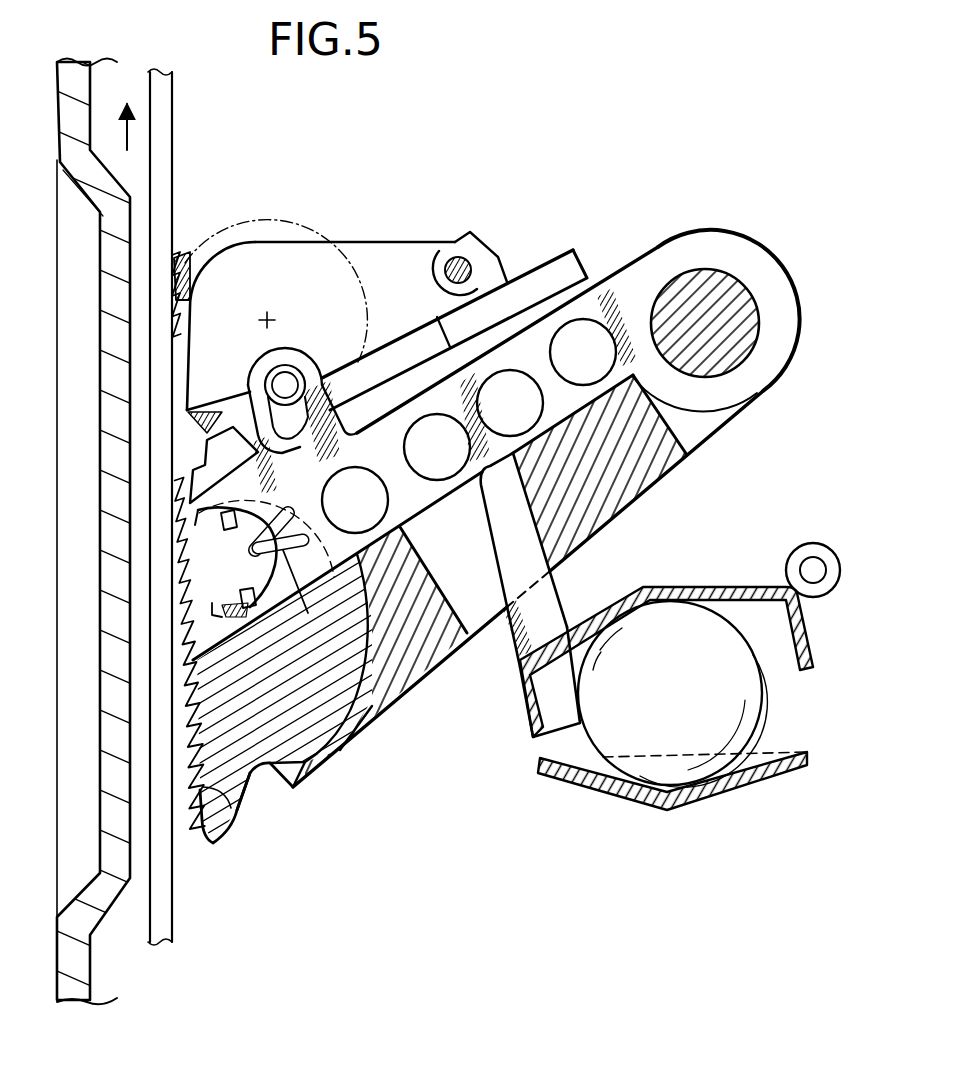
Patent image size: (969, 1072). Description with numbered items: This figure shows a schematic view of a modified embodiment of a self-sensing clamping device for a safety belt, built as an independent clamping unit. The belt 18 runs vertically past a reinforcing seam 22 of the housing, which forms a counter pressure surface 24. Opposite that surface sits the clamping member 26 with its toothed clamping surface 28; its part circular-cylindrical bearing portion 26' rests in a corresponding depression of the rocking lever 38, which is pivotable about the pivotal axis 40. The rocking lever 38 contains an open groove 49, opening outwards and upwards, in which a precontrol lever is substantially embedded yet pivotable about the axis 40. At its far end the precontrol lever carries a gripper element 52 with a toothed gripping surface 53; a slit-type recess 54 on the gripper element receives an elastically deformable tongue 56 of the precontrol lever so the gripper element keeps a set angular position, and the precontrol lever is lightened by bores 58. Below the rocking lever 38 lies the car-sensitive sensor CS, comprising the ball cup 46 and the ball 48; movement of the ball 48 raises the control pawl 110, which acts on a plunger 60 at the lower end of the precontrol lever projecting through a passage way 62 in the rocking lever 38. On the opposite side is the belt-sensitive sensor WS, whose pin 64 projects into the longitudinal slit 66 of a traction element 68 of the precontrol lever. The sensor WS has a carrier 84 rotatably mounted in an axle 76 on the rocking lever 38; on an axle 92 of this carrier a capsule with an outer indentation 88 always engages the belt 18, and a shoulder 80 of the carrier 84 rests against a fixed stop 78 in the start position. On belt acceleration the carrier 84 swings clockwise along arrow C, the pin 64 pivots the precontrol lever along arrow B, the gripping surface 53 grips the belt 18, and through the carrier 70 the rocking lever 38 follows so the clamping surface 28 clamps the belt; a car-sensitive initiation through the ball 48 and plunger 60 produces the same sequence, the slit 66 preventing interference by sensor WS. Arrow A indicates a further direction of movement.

The belt 18 is at (164, 154).
The reinforcing seam 22 is at (105, 599).
The counter pressure surface 24 is at (140, 687).
The clamping member 26 is at (269, 800).
The part circular-cylindrical bearing portion 26' is at (327, 777).
The clamping surface 28 is at (224, 828).
The rocking lever 38 is at (400, 698).
The pivotal axis 40 is at (741, 350).
The ball cup 46 is at (739, 792).
The ball 48 is at (755, 702).
The open groove 49 is at (390, 391).
The gripper element 52 is at (210, 612).
The toothed gripping surface 53 is at (222, 521).
The slit-type recess 54 is at (302, 598).
The elastically deformable tongue 56 is at (359, 601).
The bores 58 is at (388, 506).
The plunger 60 is at (549, 618).
The passage way 62 is at (558, 550).
The pin 64 is at (292, 378).
The longitudinal slit 66 is at (292, 434).
The traction element 68 is at (250, 380).
The carrier 70 is at (204, 467).
The axle 76 is at (472, 260).
The fixed stop 78 is at (200, 432).
The shoulder 80 is at (186, 394).
The carrier 84 is at (358, 240).
The outer indentation 88 is at (182, 266).
The axle 92 is at (262, 314).
The control pawl 110 is at (672, 586).
The belt-sensitive sensor WS is at (308, 214).
The arrow C is at (413, 307).
The arrow B is at (660, 350).
The direction arrow A is at (760, 540).
The car-sensitive sensor CS is at (512, 770).